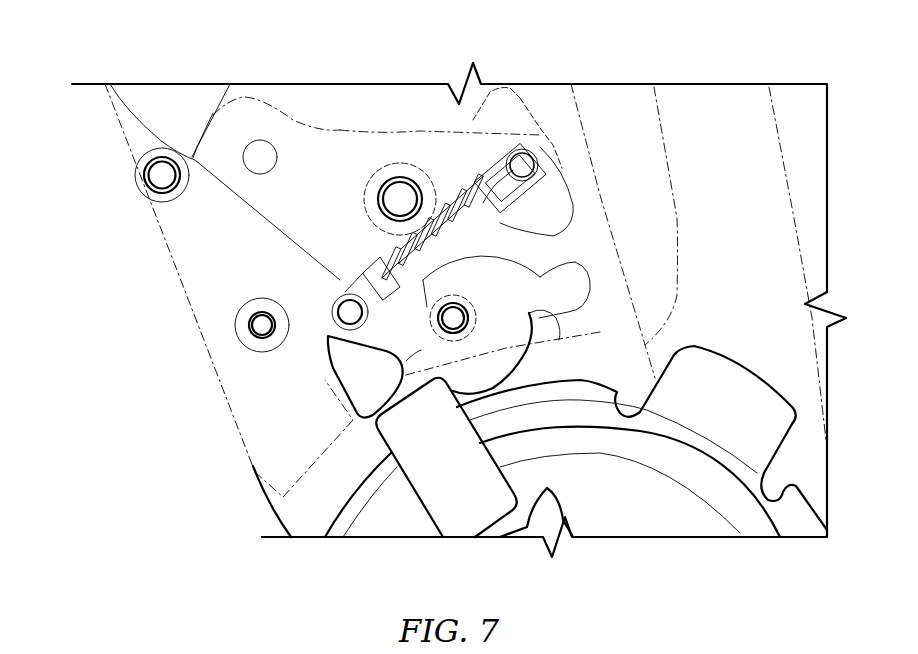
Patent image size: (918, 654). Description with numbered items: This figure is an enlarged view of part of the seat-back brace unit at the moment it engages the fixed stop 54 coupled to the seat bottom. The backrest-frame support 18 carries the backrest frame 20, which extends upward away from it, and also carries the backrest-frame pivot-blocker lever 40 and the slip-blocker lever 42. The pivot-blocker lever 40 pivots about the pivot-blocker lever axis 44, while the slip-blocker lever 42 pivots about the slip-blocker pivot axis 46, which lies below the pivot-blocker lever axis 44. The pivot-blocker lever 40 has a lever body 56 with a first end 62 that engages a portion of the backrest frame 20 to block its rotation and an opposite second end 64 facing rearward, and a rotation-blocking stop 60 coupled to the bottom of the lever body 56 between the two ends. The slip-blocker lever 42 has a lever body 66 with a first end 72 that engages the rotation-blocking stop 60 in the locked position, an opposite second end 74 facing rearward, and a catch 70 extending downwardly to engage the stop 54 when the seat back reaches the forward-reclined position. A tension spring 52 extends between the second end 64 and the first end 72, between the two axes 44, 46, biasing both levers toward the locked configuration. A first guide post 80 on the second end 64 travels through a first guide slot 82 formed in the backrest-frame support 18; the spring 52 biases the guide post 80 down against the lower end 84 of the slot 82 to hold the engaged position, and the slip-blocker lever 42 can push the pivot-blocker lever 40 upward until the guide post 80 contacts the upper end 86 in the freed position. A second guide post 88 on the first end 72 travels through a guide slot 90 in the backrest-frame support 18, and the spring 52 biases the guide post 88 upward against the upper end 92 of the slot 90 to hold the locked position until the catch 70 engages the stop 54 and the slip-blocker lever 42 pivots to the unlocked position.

The backrest-frame support 18 is at (127, 140).
The backrest frame 20 is at (675, 113).
The backrest-frame pivot-blocker lever 40 is at (444, 132).
The slip-blocker lever 42 is at (488, 272).
The pivot-blocker lever axis 44 is at (400, 199).
The slip-blocker pivot axis 46 is at (510, 268).
The tension spring 52 is at (483, 185).
The fixed stop 54 is at (423, 450).
The lever body 56 is at (293, 143).
The rotation-blocking stop 60 is at (342, 263).
The first end 62 is at (213, 137).
The second end 64 is at (558, 217).
The lever body 66 is at (500, 329).
The catch 70 is at (522, 360).
The first end 72 is at (326, 298).
The second end 74 is at (580, 273).
The first guide post 80 is at (524, 152).
The first guide slot 82 is at (523, 117).
The lower end 84 is at (535, 183).
The upper end 86 is at (485, 105).
The second guide post 88 is at (350, 300).
The guide slot 90 is at (358, 364).
The upper end 92 is at (335, 279).